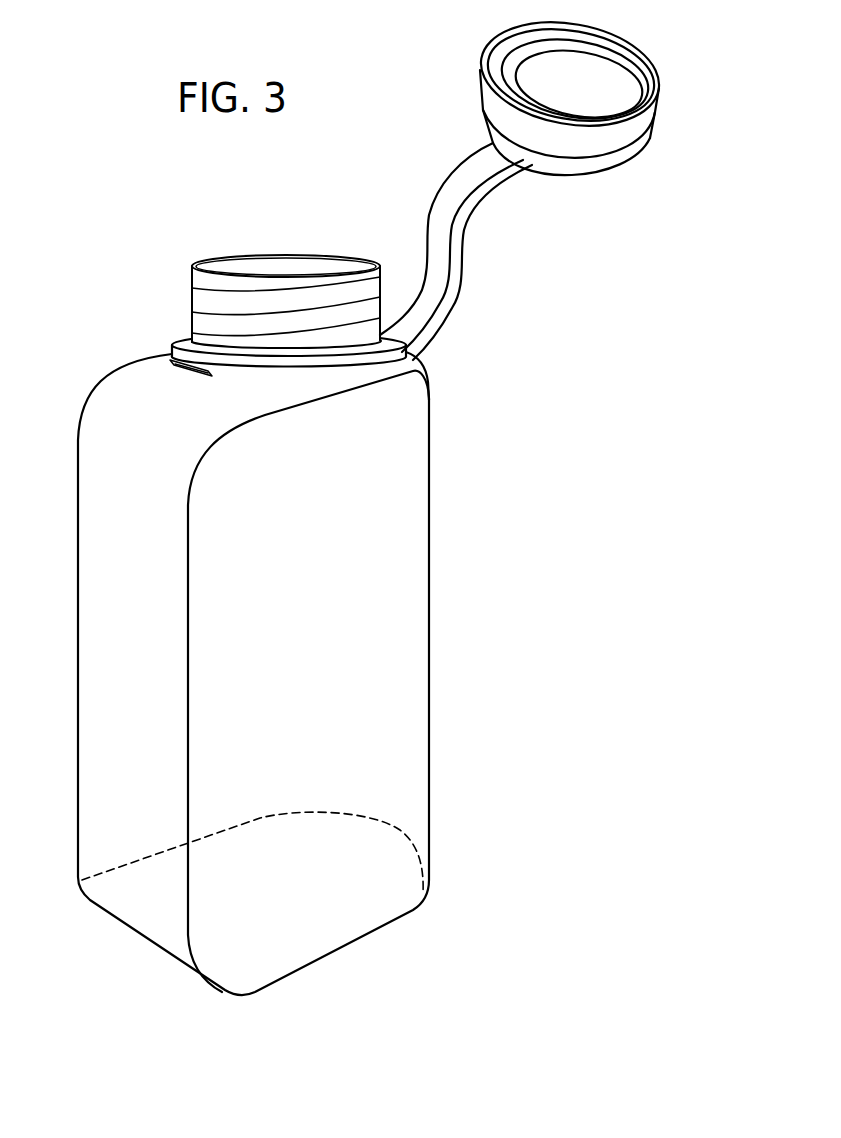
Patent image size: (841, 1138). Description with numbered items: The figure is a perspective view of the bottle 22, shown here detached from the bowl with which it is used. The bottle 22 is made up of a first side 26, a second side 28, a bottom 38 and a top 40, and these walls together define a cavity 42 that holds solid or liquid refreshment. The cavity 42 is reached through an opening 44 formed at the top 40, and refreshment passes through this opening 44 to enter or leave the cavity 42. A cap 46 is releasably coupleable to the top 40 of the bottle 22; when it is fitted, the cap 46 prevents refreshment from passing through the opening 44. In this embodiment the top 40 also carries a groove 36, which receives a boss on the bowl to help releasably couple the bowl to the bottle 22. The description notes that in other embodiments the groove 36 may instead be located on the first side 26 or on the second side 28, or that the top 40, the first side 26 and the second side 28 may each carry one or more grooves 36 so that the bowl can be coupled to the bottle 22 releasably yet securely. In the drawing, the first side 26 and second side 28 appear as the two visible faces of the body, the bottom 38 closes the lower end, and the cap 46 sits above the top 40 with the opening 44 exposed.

The bottle 22 is at (468, 413).
The first side 26 is at (108, 661).
The second side 28 is at (413, 637).
The groove 36 is at (167, 358).
The bottom 38 is at (348, 892).
The top 40 is at (297, 255).
The cavity 42 is at (118, 797).
The opening 44 is at (238, 248).
The cap 46 is at (495, 92).